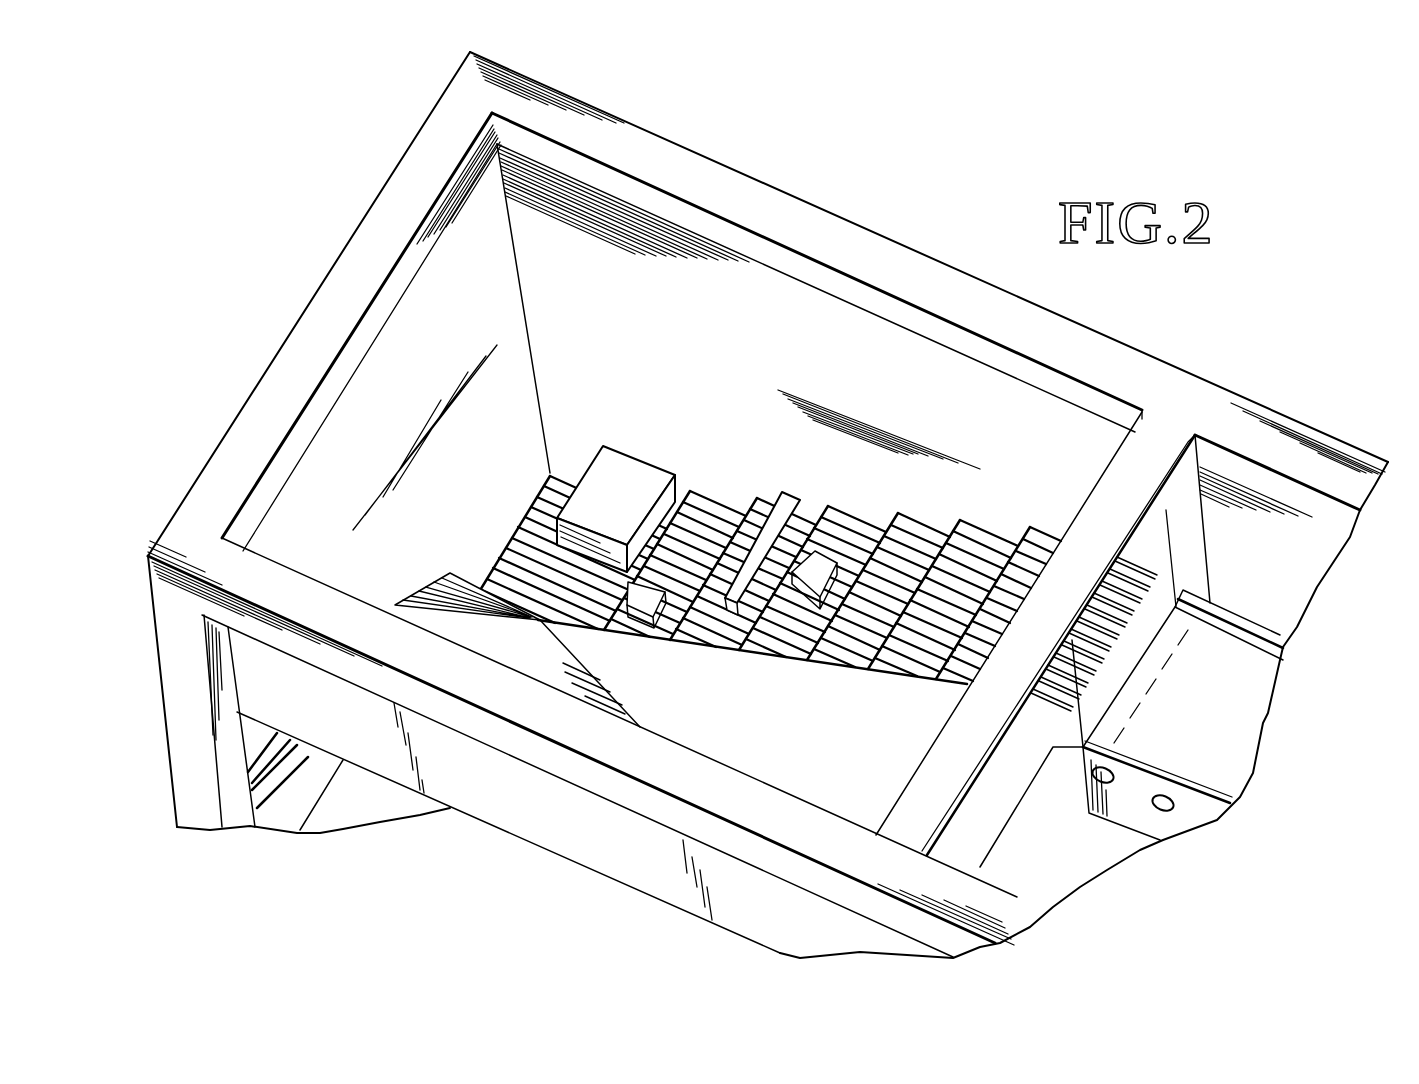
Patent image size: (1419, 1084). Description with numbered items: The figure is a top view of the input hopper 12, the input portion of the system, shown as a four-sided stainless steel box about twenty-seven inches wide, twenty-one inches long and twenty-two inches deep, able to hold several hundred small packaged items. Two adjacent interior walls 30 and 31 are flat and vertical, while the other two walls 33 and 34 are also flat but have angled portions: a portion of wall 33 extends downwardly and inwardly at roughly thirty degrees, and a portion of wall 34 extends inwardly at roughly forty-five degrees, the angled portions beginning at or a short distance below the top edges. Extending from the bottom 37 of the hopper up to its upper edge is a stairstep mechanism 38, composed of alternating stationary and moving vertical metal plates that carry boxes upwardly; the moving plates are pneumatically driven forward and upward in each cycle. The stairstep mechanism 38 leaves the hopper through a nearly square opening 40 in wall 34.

The input hopper 12 is at (849, 190).
The interior wall 30 is at (330, 433).
The interior wall 31 is at (888, 340).
The wall 33 is at (600, 672).
The wall 34 is at (905, 777).
The bottom 37 is at (563, 477).
The stairstep mechanism 38 is at (752, 478).
The opening 40 is at (1167, 511).